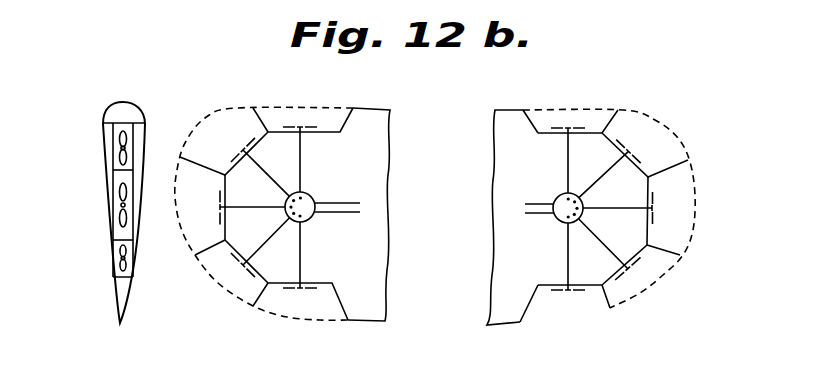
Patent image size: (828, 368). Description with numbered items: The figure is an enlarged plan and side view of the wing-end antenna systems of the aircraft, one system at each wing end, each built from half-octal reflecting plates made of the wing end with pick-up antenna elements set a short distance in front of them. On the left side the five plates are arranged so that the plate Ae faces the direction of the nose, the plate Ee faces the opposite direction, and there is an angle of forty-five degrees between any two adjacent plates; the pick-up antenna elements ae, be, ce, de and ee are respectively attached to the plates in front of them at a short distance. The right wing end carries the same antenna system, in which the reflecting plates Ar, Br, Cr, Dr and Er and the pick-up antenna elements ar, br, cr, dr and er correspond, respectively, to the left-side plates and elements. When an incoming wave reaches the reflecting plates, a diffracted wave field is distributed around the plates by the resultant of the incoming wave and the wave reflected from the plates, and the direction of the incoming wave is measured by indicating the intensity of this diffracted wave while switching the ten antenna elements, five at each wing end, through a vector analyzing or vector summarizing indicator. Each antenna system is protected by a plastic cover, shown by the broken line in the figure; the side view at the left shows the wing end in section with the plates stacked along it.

The half-octal reflecting plate Ae is at (303, 150).
The half-octal reflecting plate Ee is at (300, 271).
The pick-up antenna element ae is at (309, 99).
The pick-up antenna element be is at (188, 124).
The pick-up antenna element ce is at (161, 190).
The pick-up antenna element de is at (212, 296).
The pick-up antenna element ee is at (305, 330).
The half-octal reflecting plate Ar is at (570, 151).
The half-octal reflecting plate Br is at (633, 165).
The half-octal reflecting plate Cr is at (618, 211).
The half-octal reflecting plate Dr is at (630, 252).
The half-octal reflecting plate Er is at (565, 272).
The pick-up antenna element ar is at (575, 102).
The pick-up antenna element br is at (676, 125).
The pick-up antenna element cr is at (705, 196).
The pick-up antenna element dr is at (665, 289).
The pick-up antenna element er is at (562, 330).